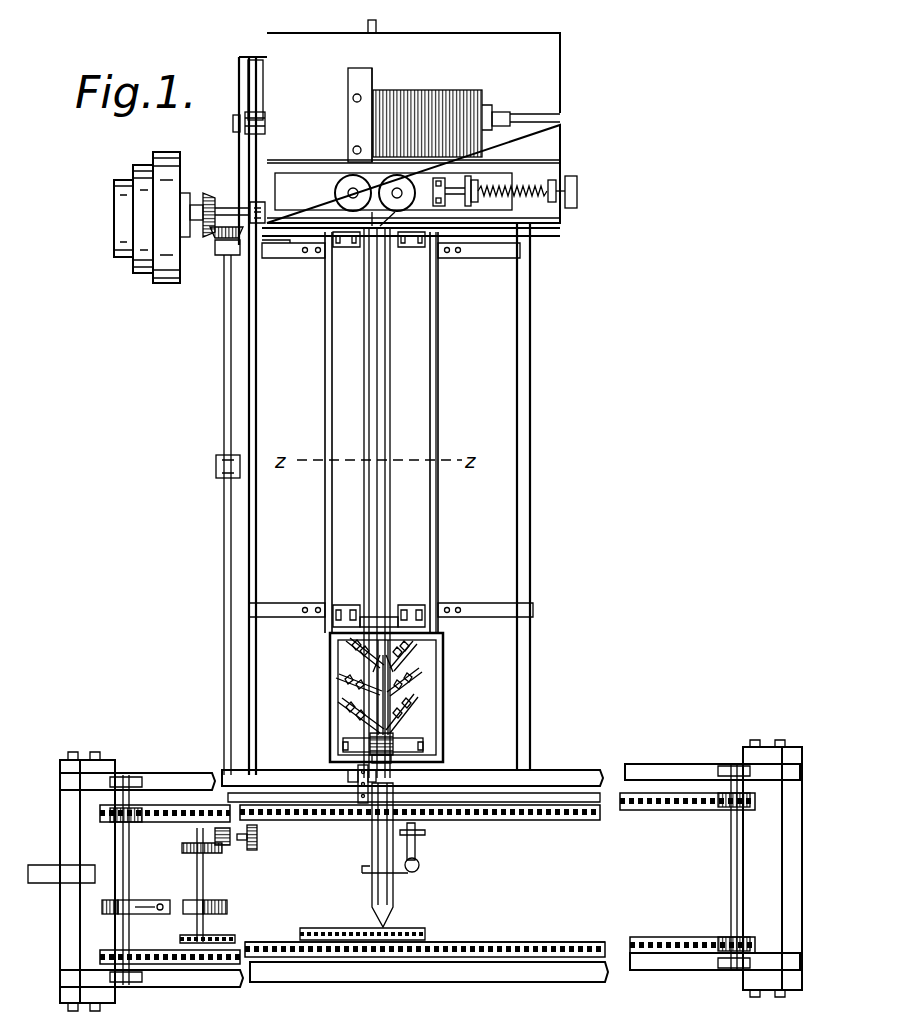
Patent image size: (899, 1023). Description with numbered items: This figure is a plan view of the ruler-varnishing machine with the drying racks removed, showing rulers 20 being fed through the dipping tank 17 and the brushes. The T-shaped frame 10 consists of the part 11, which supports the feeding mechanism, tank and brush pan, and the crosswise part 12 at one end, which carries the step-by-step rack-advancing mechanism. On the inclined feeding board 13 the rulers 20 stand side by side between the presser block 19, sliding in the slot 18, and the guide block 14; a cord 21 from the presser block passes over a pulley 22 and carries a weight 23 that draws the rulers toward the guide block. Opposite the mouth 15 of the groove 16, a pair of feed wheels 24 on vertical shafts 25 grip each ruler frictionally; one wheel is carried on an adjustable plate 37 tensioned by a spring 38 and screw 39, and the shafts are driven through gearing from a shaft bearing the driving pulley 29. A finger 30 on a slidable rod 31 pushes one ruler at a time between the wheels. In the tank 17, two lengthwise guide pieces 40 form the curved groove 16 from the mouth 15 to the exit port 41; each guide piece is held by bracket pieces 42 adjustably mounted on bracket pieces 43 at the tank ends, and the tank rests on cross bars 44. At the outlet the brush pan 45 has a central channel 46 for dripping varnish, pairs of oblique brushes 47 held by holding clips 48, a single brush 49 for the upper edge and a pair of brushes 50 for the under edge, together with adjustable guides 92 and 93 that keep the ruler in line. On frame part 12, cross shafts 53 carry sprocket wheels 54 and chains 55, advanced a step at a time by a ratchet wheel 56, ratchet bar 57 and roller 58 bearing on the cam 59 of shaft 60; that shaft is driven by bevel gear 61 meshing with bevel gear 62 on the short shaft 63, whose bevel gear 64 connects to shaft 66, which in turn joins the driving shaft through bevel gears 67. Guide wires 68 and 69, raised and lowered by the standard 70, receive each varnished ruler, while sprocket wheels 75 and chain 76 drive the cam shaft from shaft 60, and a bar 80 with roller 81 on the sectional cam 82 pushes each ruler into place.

The frame 10 is at (540, 772).
The frame part 11 is at (528, 452).
The frame part 12 is at (412, 964).
The feeding board 13 is at (557, 80).
The guide block 14 is at (370, 70).
The mouth 15 is at (370, 240).
The groove 16 is at (375, 386).
The dipping tank 17 is at (437, 411).
The slot 18 is at (560, 118).
The presser block 19 is at (498, 117).
The rulers 20 is at (470, 93).
The cord 21 is at (255, 105).
The pulley 22 is at (250, 114).
The weight 23 is at (235, 130).
The feed wheels 24 is at (338, 196).
The vertical shafts 25 is at (397, 193).
The driving pulley 29 is at (155, 275).
The finger 30 is at (374, 80).
The rod 31 is at (377, 20).
The plate 37 is at (516, 174).
The spring 38 is at (556, 186).
The screw 39 is at (578, 193).
The guide pieces 40 is at (368, 510).
The exit port 41 is at (386, 616).
The bracket pieces 42 is at (323, 257).
The bracket pieces 43 is at (342, 606).
The cross bars 44 is at (495, 255).
The brush pan 45 is at (441, 646).
The channel 46 is at (384, 662).
The brushes 47 is at (345, 697).
The holding clips 48 is at (410, 702).
The brush 49 is at (360, 670).
The brushes 50 is at (345, 750).
The cross shafts 53 is at (128, 880).
The sprocket wheels 54 is at (118, 822).
The sprocket chains 55 is at (478, 945).
The ratchet wheel 56 is at (112, 912).
The ratchet bar 57 is at (165, 912).
The roller 58 is at (192, 914).
The cam 59 is at (226, 914).
The shaft 60 is at (204, 884).
The bevel gear 61 is at (215, 852).
The bevel gear 62 is at (228, 845).
The short shaft 63 is at (255, 842).
The bevel gear 64 is at (257, 836).
The shaft 66 is at (224, 407).
The bevel gears 67 is at (210, 242).
The guide wires 68 is at (362, 804).
The guide wires 69 is at (375, 917).
The standard 70 is at (355, 795).
The sprocket wheels 75 is at (212, 938).
The chain 76 is at (290, 942).
The bar 80 is at (416, 850).
The roller 81 is at (420, 868).
The sectional cam 82 is at (365, 878).
The guide 92 is at (390, 652).
The end guide 93 is at (416, 770).